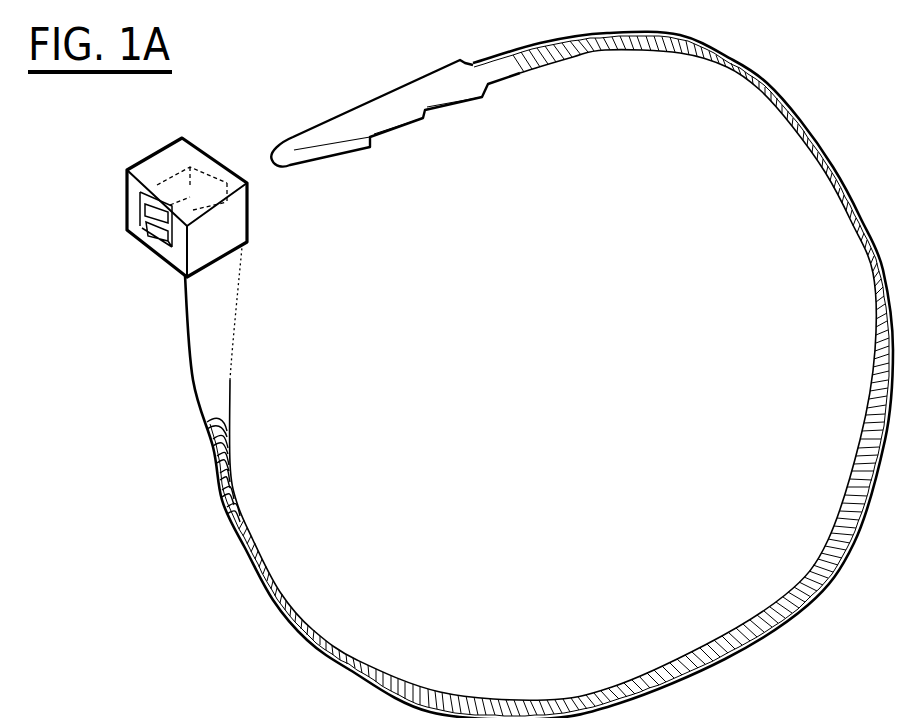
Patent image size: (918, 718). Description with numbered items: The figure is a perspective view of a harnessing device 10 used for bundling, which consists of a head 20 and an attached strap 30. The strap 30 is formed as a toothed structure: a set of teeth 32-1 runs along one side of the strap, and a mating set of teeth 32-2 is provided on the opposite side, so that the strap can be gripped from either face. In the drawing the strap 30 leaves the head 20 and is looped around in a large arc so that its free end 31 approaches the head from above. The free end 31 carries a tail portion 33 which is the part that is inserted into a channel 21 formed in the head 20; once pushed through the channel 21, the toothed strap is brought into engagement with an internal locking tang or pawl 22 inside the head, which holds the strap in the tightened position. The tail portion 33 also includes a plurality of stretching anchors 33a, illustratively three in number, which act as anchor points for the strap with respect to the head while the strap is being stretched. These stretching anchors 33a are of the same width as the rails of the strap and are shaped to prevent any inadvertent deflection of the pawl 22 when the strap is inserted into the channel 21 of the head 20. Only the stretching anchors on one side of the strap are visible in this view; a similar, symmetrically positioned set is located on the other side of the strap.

The harnessing device 10 is at (98, 452).
The head 20 is at (160, 160).
The channel 21 is at (157, 243).
The locking tang or pawl 22 is at (200, 205).
The strap 30 is at (510, 375).
The free end 31 is at (395, 136).
The set of teeth 32-1 is at (608, 697).
The mating set of teeth 32-2 is at (230, 512).
The tail portion 33 is at (352, 150).
The stretching anchors 33a is at (426, 119).